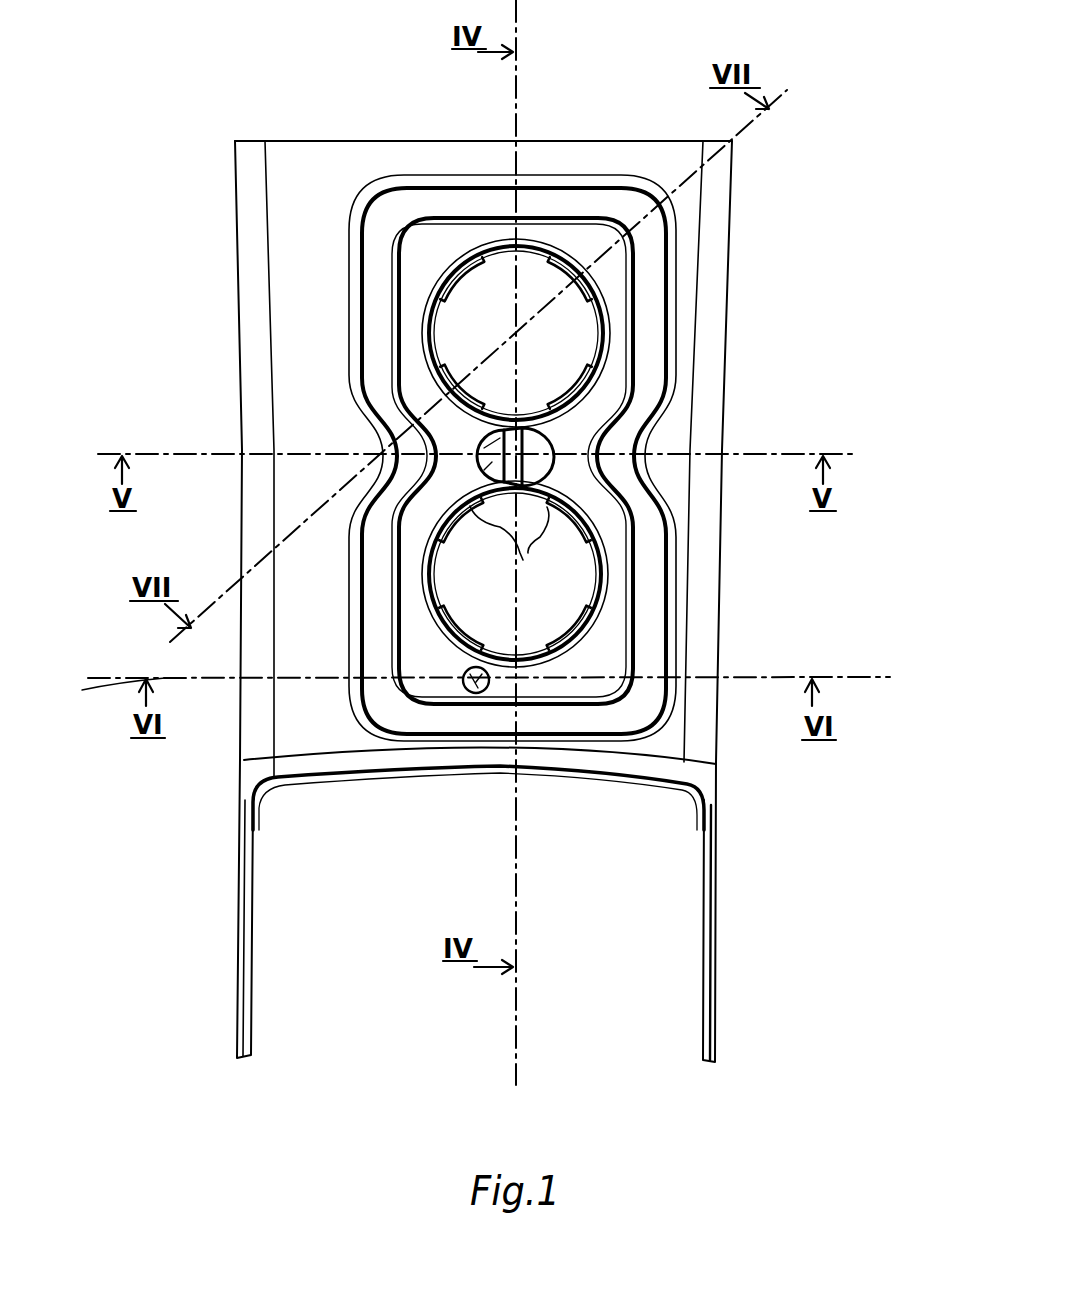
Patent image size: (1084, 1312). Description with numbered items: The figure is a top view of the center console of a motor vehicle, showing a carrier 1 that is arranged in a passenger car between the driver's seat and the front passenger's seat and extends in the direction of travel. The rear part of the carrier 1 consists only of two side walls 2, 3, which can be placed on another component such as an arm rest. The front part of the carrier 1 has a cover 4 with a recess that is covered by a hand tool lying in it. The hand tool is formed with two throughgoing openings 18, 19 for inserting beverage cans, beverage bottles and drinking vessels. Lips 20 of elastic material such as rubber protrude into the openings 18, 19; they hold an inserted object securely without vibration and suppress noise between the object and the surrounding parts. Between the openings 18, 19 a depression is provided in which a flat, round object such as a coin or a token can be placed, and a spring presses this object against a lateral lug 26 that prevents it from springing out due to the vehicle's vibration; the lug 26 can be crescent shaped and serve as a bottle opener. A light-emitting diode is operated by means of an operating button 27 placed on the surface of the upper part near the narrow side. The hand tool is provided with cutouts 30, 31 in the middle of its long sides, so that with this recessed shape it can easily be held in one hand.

The carrier 1 is at (748, 886).
The side wall 2 is at (252, 916).
The side wall 3 is at (700, 905).
The cover 4 is at (312, 176).
The throughgoing opening 18 is at (577, 330).
The throughgoing opening 19 is at (570, 592).
The lips 20 is at (525, 542).
The lateral lug 26 is at (488, 462).
The operating button 27 is at (480, 693).
The cutout 30 is at (372, 432).
The cutout 31 is at (664, 445).